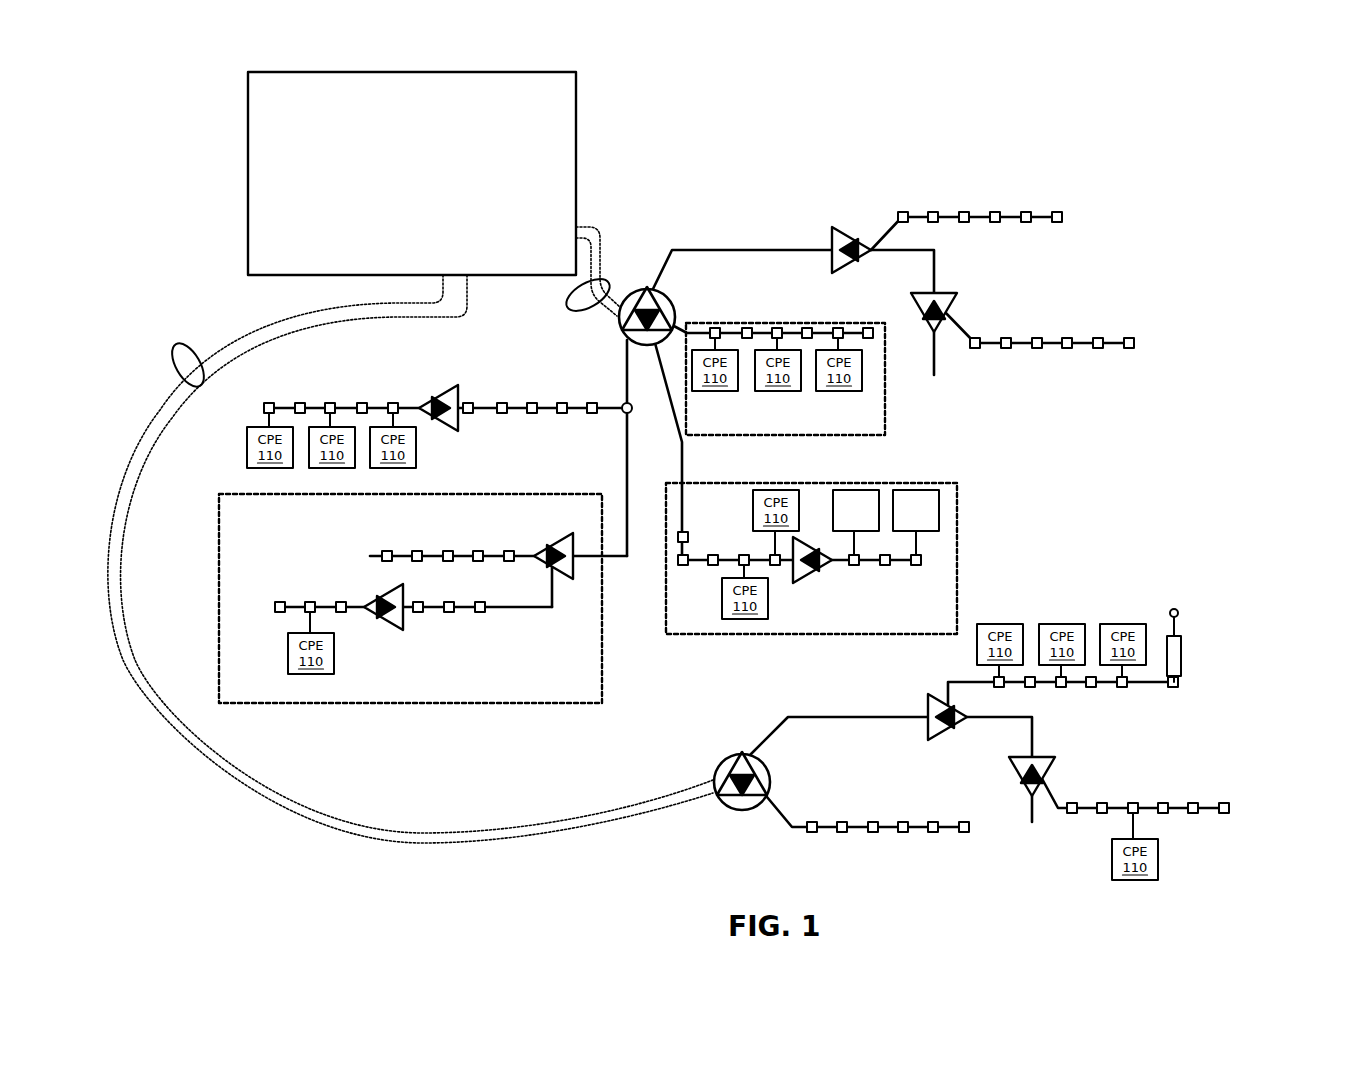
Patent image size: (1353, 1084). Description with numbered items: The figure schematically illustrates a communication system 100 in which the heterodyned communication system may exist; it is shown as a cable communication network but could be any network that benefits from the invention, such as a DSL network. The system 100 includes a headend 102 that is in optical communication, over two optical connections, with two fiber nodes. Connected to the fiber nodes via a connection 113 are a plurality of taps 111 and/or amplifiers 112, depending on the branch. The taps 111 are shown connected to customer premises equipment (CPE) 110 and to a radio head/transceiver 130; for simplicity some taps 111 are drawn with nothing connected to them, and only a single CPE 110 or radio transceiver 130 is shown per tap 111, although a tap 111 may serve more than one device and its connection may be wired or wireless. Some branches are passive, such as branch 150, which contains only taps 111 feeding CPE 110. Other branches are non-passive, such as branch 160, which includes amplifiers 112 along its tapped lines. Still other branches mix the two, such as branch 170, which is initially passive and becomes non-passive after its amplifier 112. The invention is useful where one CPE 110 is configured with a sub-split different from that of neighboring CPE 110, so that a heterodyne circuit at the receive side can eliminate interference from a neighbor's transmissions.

The system 100 is at (1278, 156).
The headend 102 is at (378, 102).
The customer premises equipment (CPE) 110 is at (702, 609).
The tap 111 is at (1028, 222).
The amplifier 112 is at (431, 384).
The connection 113 is at (674, 268).
The radio head/transceiver 130 is at (1191, 677).
The branch 150 is at (881, 423).
The branch 160 is at (261, 693).
The branch 170 is at (709, 623).